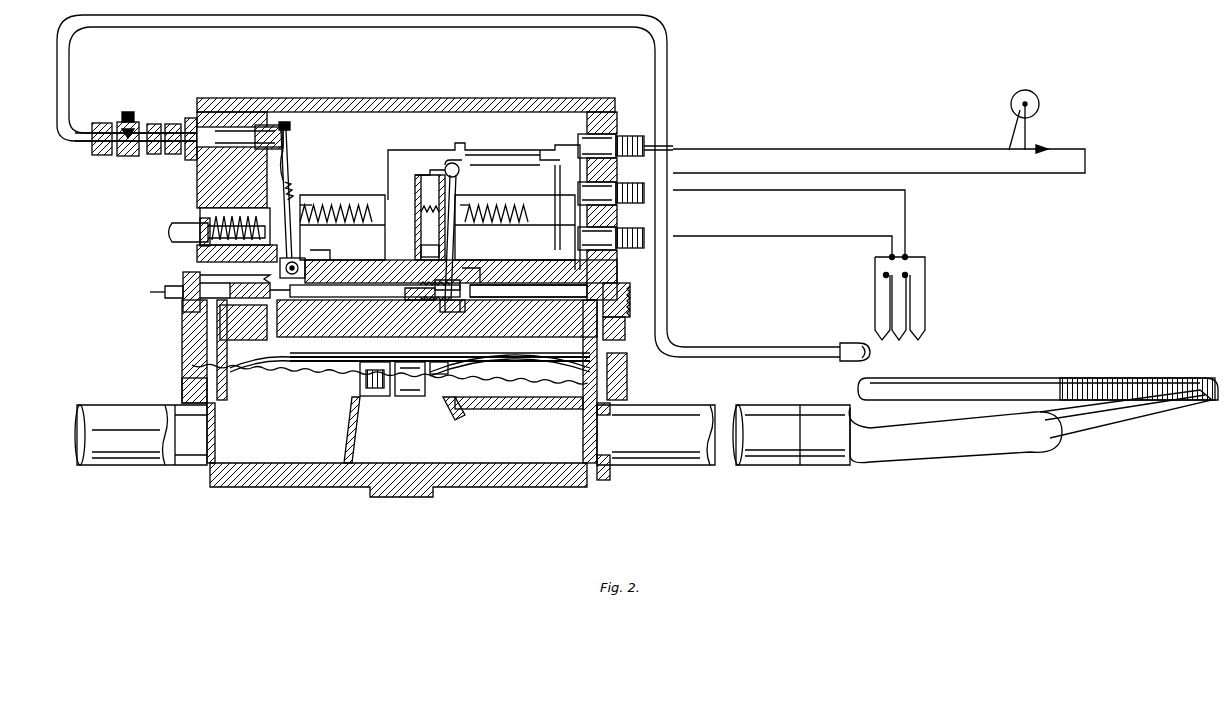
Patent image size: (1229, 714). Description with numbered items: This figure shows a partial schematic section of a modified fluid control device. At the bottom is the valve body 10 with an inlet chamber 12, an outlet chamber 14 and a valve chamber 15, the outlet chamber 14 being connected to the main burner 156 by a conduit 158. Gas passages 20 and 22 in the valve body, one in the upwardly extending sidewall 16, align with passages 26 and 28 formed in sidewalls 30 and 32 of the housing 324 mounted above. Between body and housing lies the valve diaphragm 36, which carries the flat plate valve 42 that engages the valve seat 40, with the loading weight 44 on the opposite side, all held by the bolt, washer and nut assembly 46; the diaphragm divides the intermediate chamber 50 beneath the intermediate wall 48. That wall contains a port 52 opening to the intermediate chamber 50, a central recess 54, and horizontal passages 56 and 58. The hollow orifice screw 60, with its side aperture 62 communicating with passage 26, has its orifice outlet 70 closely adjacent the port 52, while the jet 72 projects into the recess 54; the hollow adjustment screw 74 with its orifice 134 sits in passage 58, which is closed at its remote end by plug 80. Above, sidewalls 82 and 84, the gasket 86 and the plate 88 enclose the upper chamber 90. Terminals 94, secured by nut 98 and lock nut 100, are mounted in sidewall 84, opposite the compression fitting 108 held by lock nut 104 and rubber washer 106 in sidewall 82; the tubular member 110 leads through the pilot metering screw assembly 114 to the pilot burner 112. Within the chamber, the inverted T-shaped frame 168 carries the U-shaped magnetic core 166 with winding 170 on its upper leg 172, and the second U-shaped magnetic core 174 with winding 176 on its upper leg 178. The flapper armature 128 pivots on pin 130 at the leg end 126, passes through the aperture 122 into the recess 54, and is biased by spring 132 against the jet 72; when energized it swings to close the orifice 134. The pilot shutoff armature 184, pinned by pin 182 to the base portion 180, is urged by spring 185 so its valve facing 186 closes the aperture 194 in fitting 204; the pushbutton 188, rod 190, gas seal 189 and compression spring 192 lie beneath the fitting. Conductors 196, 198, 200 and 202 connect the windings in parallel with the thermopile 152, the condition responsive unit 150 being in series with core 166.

The valve body 10 is at (495, 488).
The inlet chamber 12 is at (265, 432).
The outlet chamber 14 is at (551, 447).
The valve chamber 15 is at (401, 447).
The sidewall 16 is at (190, 373).
The passage 20 is at (205, 385).
The passage 22 is at (627, 385).
The passage 26 is at (215, 330).
The passage 28 is at (625, 341).
The sidewall 30 is at (195, 340).
The sidewall 32 is at (625, 325).
The valve diaphragm 36 is at (276, 357).
The valve seat 40 is at (378, 398).
The flat plate valve 42 is at (450, 368).
The loading weight 44 is at (345, 357).
The bolt, washer and nut assembly 46 is at (415, 398).
The intermediate wall 48 is at (335, 337).
The intermediate chamber 50 is at (513, 353).
The port 52 is at (265, 343).
The recess 54 is at (430, 290).
The horizontal passage 56 is at (380, 290).
The horizontal passage 58 is at (570, 298).
The hollow orifice screw 60 is at (185, 285).
The side aperture 62 is at (185, 298).
The orifice outlet 70 is at (280, 292).
The jet 72 is at (442, 282).
The hollow adjustment screw 74 is at (470, 268).
The plug 80 is at (630, 300).
The sidewall 82 is at (210, 170).
The sidewall 84 is at (635, 185).
The gasket 86 is at (617, 108).
The housing plate 88 is at (578, 100).
The upper chamber 90 is at (550, 150).
The terminal 94 is at (617, 120).
The nut 98 is at (630, 133).
The lock nut 100 is at (645, 138).
The lock nut 104 is at (185, 125).
The rubber washer 106 is at (190, 118).
The compression fitting 108 is at (133, 118).
The tubular member 110 is at (668, 50).
The pilot burner 112 is at (850, 345).
The pilot metering screw assembly 114 is at (88, 113).
The aperture 122 is at (430, 260).
The end of upper leg 126 is at (448, 165).
The flapper armature 128 is at (450, 228).
The pin 130 is at (462, 170).
The spring 132 is at (425, 222).
The orifice 134 is at (458, 310).
The condition responsive unit 150 is at (1044, 137).
The thermopile 152 is at (930, 318).
The main burner 156 is at (1016, 368).
The conduit 158 is at (742, 467).
The U-shaped magnetic core 166 is at (540, 238).
The inverted T-shaped frame 168 is at (552, 262).
The winding 170 is at (505, 208).
The upper leg 172 is at (470, 208).
The second U-shaped magnetic core 174 is at (385, 232).
The winding 176 is at (340, 208).
The upper leg 178 is at (310, 208).
The base portion 180 is at (325, 258).
The pin 182 is at (290, 262).
The pilot shutoff armature 184 is at (292, 160).
The spring 185 is at (300, 145).
The valve facing 186 is at (292, 140).
The pushbutton 188 is at (178, 229).
The gas seal 189 is at (276, 205).
The rod 190 is at (205, 200).
The compression spring 192 is at (205, 195).
The aperture 194 is at (262, 125).
The conductor 196 is at (478, 148).
The conductor 198 is at (490, 155).
The conductor 200 is at (498, 150).
The conductor 202 is at (548, 230).
The fitting 204 is at (283, 130).
The housing 324 is at (620, 265).